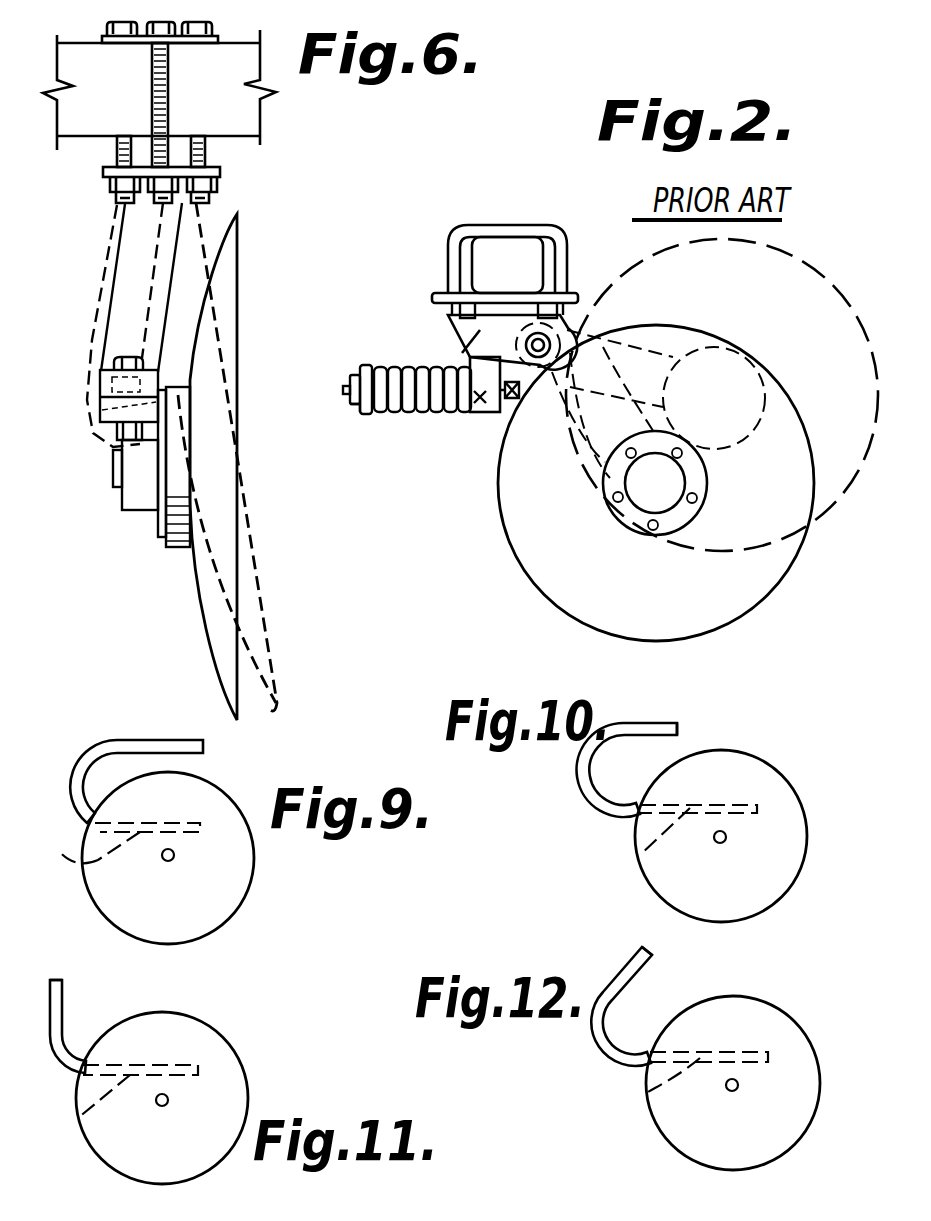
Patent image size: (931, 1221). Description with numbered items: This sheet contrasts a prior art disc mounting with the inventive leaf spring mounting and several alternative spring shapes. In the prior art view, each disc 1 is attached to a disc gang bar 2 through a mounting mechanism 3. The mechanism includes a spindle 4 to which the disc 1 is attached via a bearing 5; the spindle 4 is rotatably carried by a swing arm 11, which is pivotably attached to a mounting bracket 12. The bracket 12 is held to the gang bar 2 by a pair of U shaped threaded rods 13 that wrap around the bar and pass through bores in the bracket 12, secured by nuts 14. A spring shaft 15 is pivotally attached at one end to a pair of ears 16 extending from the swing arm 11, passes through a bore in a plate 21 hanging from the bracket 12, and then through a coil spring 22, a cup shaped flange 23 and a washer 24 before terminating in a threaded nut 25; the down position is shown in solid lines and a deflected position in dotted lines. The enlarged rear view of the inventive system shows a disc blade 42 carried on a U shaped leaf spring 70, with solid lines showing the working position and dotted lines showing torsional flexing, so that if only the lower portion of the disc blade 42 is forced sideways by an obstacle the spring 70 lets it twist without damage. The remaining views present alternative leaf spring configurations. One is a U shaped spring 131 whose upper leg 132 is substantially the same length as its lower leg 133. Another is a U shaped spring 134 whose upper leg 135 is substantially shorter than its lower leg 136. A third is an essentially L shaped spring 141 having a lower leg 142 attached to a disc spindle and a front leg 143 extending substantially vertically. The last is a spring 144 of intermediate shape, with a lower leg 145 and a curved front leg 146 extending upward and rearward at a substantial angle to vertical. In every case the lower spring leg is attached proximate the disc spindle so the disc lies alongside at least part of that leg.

In FIG. 2, the disc 1 is at (540, 578).
In FIG. 2, the disc gang bar 2 is at (502, 242).
In FIG. 2, the mounting mechanism 3 is at (471, 296).
In FIG. 2, the spindle 4 is at (645, 492).
In FIG. 2, the bearing 5 is at (632, 523).
In FIG. 2, the swing arm 11 is at (560, 470).
In FIG. 2, the mounting bracket 12 is at (478, 332).
In FIG. 2, the U shaped threaded rods 13 is at (473, 228).
In FIG. 2, the nuts 14 is at (450, 318).
In FIG. 2, the spring shaft 15 is at (350, 390).
In FIG. 2, the ears 16 is at (512, 398).
In FIG. 2, the plate 21 is at (478, 405).
In FIG. 2, the coil spring 22 is at (405, 412).
In FIG. 2, the cup shaped flange 23 is at (372, 370).
In FIG. 2, the washer 24 is at (360, 410).
In FIG. 2, the threaded nut 25 is at (354, 380).
In FIG. 6, the disc blade 42 is at (205, 604).
In FIG. 6, the U shaped leaf spring 70 is at (125, 268).
In FIG. 9, the U shaped spring 131 is at (149, 821).
In FIG. 9, the upper leg 132 is at (176, 706).
In FIG. 9, the lower leg 133 is at (120, 843).
In FIG. 10, the U shaped spring 134 is at (576, 806).
In FIG. 10, the upper leg 135 is at (696, 693).
In FIG. 10, the lower leg 136 is at (640, 862).
In FIG. 11, the spring 141 is at (84, 1009).
In FIG. 11, the lower leg 142 is at (78, 1118).
In FIG. 11, the front leg 143 is at (52, 1010).
In FIG. 12, the spring 144 is at (586, 1057).
In FIG. 12, the lower leg 145 is at (648, 1092).
In FIG. 12, the curved front leg 146 is at (620, 960).